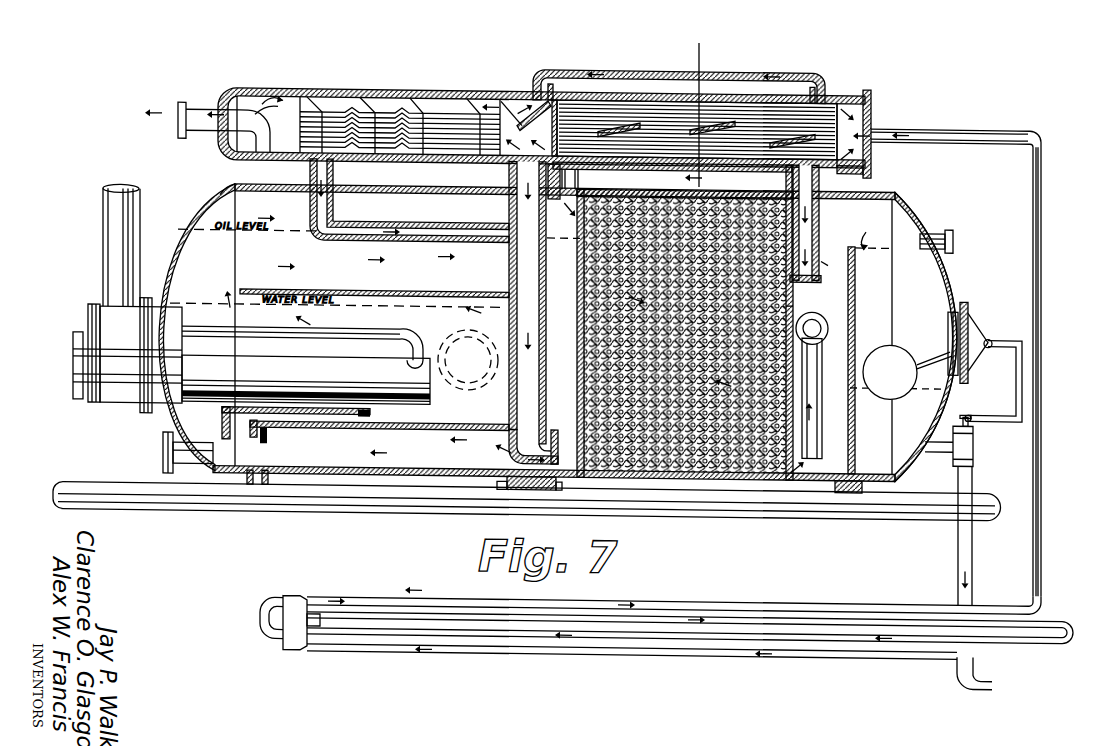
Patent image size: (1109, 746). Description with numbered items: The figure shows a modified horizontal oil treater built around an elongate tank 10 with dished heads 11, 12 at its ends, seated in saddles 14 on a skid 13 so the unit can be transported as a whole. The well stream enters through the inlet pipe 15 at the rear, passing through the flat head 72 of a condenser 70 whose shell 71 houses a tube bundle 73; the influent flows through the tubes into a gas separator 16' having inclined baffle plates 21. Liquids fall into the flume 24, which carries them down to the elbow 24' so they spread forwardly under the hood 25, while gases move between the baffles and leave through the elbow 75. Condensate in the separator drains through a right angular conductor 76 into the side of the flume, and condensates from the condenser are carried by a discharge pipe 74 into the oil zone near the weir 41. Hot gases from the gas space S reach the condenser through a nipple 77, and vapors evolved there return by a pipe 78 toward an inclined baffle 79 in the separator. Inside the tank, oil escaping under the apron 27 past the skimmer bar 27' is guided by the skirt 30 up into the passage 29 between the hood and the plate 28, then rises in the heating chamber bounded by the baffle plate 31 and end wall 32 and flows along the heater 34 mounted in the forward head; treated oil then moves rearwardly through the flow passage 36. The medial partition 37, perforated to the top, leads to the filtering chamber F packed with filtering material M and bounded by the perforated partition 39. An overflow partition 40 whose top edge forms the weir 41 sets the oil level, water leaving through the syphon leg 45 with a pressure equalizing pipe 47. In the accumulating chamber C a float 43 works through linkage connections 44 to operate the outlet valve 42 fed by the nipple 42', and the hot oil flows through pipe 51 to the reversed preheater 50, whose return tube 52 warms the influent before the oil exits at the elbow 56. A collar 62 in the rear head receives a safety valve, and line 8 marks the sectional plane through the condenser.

The tank 10 is at (865, 189).
The head 11 is at (193, 222).
The head 12 is at (920, 272).
The skid 13 is at (103, 496).
The saddles 14 is at (264, 488).
The inlet pipe 15 is at (1048, 284).
The gas separator 16' is at (541, 97).
The inclined baffle plates 21 is at (336, 118).
The flume 24 is at (504, 312).
The elbow 24' is at (502, 515).
The spreader hood 25 is at (404, 433).
The apron 27 is at (214, 502).
The skimmer bar 27' is at (302, 487).
The plate 28 is at (373, 384).
The passage 29 is at (307, 421).
The skirt 30 is at (173, 414).
The baffle plate 31 is at (370, 292).
The end wall 32 is at (500, 319).
The heater 34 is at (167, 408).
The flow passage 36 is at (318, 274).
The medial partition 37 is at (577, 303).
The perforated partition 39 is at (793, 303).
The overflow partition 40 is at (852, 300).
The weir 41 is at (871, 227).
The outlet valve 42 is at (989, 443).
The oil outlet nipple 42' is at (962, 417).
The float 43 is at (892, 352).
The linkage connections 44 is at (1022, 379).
The water discharge pipe 45 is at (806, 456).
The pressure equalizing pipe 47 is at (836, 265).
The preheater 50 is at (666, 608).
The pipe 51 is at (960, 556).
The return tube 52 is at (750, 641).
The outlet elbow 56 is at (957, 676).
The collar 62 is at (953, 247).
The condenser 70 is at (694, 80).
The shell 71 is at (573, 99).
The head 72 is at (871, 104).
The tube bundle 73 is at (765, 127).
The discharge pipe 74 is at (820, 178).
The elbow 75 is at (247, 109).
The right angular conductor 76 is at (322, 226).
The nipple 77 is at (582, 175).
The pipe 78 is at (658, 72).
The inclined baffle 79 is at (493, 100).
The section line 8 is at (713, 118).
The gas space S is at (222, 198).
The accumulating chamber C is at (985, 295).
The filtering material M is at (688, 480).
The filtering chamber F is at (722, 480).